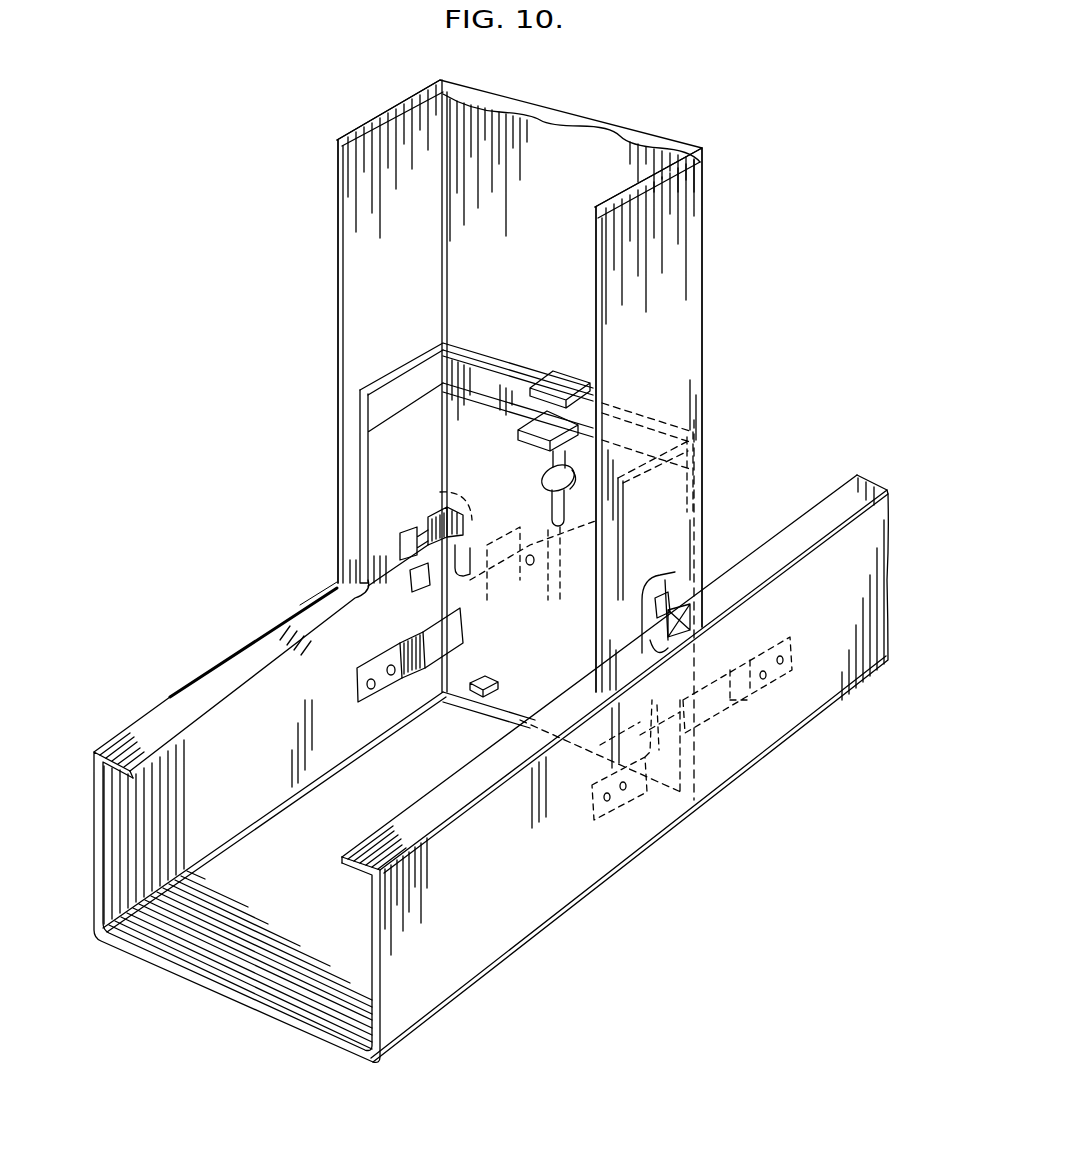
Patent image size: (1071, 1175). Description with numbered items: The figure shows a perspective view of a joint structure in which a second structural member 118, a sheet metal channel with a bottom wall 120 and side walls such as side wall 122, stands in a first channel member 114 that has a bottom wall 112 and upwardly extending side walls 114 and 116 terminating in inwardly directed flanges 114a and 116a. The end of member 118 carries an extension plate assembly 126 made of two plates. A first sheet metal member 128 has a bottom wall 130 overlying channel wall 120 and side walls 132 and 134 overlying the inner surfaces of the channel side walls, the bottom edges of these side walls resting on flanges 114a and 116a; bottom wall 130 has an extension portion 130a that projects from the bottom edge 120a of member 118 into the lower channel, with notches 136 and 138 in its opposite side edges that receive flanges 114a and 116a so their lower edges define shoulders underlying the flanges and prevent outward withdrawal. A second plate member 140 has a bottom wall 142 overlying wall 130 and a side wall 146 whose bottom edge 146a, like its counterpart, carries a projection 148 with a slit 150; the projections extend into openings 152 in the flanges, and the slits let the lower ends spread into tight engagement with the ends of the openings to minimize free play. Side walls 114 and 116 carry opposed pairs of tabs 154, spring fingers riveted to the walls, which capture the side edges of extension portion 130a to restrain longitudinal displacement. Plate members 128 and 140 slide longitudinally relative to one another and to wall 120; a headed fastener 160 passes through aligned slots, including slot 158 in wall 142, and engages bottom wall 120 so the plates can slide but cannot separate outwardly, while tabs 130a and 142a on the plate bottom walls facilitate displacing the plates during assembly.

The bottom wall 112 is at (270, 993).
The side wall 114 is at (465, 758).
The inwardly directed flange 114a is at (177, 707).
The side wall 116 is at (615, 768).
The inwardly directed flange 116a is at (403, 838).
The second structural member 118 is at (504, 434).
The bottom wall 120 is at (522, 102).
The bottom edge 120a is at (427, 499).
The side wall 122 is at (337, 422).
The extension plate assembly 126 is at (490, 719).
The first sheet metal member 128 is at (464, 506).
The bottom wall 130 is at (459, 520).
The extension portion 130a is at (567, 386).
The side wall 132 is at (360, 400).
The side wall 134 is at (686, 326).
The notch 136 is at (462, 555).
The notch 138 is at (693, 612).
The second plate member 140 is at (592, 425).
The bottom wall 142 is at (419, 439).
The tab 142a is at (312, 514).
The side wall 146 is at (630, 527).
The bottom edge 146a is at (657, 603).
The projection 148 is at (403, 540).
The slit or notch 150 is at (422, 588).
The opening 152 is at (330, 590).
The tab 154 is at (560, 545).
The slot 158 is at (565, 512).
The headed fastener 160 is at (543, 480).